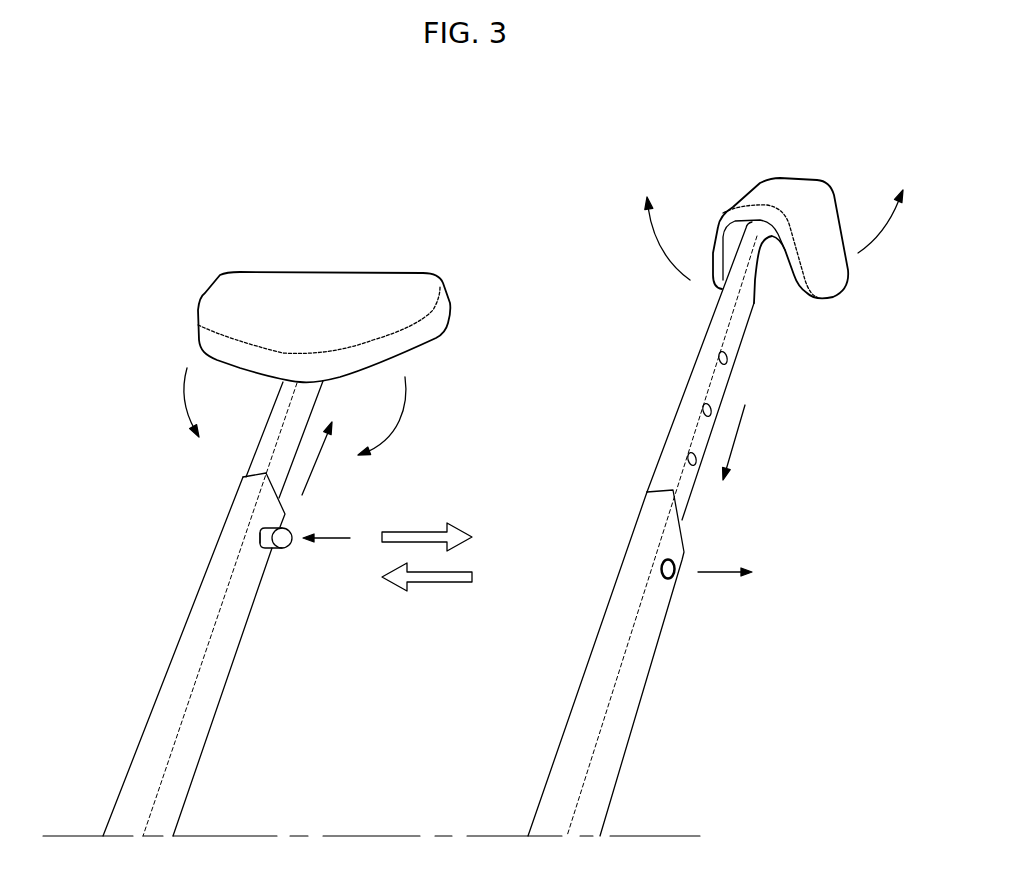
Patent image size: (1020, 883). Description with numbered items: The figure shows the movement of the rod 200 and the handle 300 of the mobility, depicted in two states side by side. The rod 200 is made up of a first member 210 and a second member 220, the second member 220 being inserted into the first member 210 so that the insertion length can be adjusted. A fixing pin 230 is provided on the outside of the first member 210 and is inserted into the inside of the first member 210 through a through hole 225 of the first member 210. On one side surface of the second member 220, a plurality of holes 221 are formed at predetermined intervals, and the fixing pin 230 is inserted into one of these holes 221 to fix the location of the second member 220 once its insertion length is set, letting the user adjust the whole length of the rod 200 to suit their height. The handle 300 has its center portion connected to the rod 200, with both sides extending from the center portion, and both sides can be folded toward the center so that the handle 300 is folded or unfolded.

The rod 200 is at (110, 470).
The first member 210 is at (220, 583).
The second member 220 is at (258, 461).
The holes 221 is at (727, 357).
The through hole 225 is at (260, 538).
The fixing pin 230 is at (292, 541).
The handle 300 is at (332, 286).